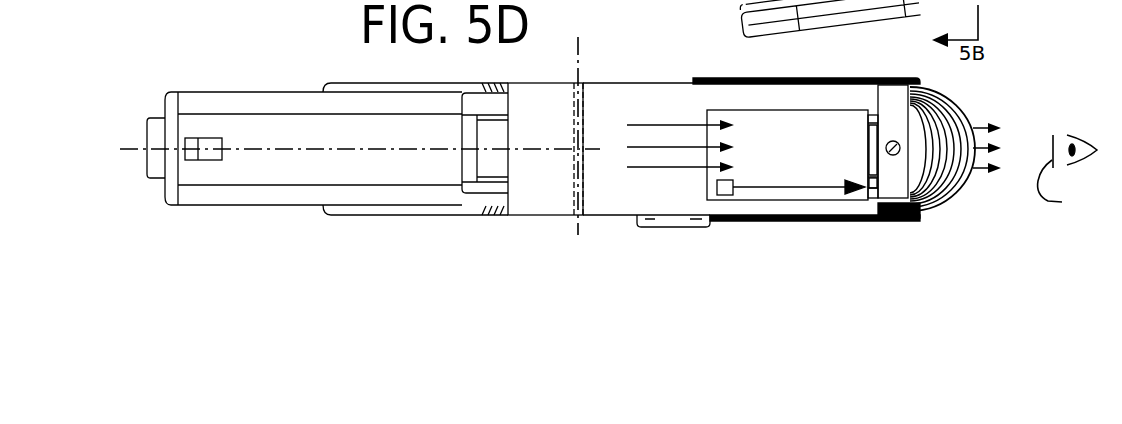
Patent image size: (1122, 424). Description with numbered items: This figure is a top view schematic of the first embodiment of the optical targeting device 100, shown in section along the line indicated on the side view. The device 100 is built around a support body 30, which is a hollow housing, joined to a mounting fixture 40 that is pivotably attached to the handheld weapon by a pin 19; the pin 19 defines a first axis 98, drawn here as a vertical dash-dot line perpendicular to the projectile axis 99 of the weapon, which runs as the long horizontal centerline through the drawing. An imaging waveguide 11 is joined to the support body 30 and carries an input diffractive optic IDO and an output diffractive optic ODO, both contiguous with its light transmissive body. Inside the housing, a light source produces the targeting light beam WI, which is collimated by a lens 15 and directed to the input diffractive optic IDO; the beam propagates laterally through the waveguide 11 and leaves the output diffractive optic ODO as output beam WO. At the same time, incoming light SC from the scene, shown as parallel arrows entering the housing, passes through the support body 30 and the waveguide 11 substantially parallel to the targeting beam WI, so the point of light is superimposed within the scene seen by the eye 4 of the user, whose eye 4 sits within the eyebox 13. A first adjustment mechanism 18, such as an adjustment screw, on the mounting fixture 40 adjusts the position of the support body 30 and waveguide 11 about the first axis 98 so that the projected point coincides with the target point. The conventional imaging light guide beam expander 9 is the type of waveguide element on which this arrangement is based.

The eye 4 is at (1081, 146).
The imaging light guide beam expander 9 is at (874, 114).
The imaging waveguide 11 is at (862, 128).
The eyebox 13 is at (1062, 202).
The lens 15 is at (850, 183).
The first adjustment mechanism 18 is at (899, 143).
The pin 19 is at (583, 190).
The support body 30 is at (742, 110).
The mounting fixture 40 is at (559, 217).
The first axis 98 is at (578, 72).
The axis of the handheld weapon 99 is at (367, 149).
The optical targeting device 100 is at (670, 78).
The incoming light from the scene SC is at (632, 147).
The targeting light beam WI is at (794, 187).
The output beam WO is at (993, 158).
The output diffractive optic ODO is at (873, 135).
The input diffractive optic IDO is at (877, 193).